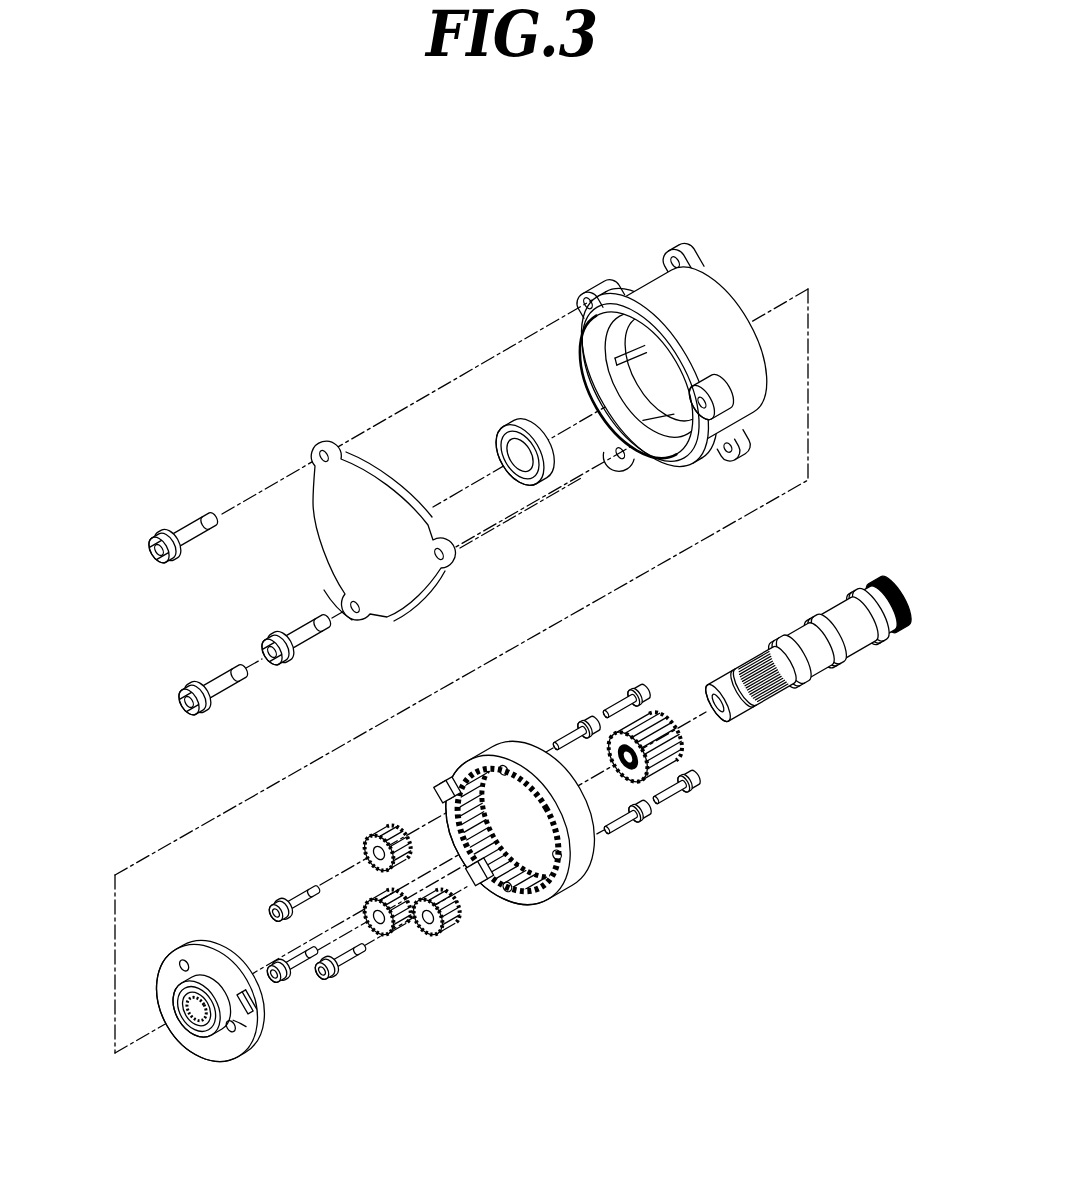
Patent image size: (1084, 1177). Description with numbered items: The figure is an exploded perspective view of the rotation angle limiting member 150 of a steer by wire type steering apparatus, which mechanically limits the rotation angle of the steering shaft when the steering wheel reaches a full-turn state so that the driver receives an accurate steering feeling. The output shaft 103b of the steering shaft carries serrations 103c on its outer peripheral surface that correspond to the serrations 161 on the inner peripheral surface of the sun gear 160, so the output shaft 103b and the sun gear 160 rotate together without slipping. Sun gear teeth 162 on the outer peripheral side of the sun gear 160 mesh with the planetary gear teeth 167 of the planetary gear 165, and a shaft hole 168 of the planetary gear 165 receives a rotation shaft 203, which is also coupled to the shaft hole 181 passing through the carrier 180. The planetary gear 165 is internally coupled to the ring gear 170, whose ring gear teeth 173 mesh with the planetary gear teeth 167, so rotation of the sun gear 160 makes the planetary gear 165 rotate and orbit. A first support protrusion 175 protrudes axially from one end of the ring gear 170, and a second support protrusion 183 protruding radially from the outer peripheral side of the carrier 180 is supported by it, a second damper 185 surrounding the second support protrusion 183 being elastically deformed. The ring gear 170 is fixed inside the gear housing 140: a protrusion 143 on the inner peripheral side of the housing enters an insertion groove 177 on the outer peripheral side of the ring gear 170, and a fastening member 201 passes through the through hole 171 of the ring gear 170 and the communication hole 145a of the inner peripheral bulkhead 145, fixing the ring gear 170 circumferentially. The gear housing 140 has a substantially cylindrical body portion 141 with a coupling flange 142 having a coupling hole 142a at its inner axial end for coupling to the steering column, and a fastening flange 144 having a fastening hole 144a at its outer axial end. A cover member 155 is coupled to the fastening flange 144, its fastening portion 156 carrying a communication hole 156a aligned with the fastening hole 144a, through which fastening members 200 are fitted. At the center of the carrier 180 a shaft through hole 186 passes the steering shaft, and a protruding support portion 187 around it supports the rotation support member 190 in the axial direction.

The output shaft 103b is at (807, 673).
The serrations 103c is at (780, 702).
The gear housing 140 is at (635, 343).
The body portion 141 is at (683, 357).
The coupling flange 142 is at (682, 262).
The coupling hole 142a is at (675, 262).
The protrusion 143 is at (640, 383).
The fastening flange 144 is at (599, 297).
The fastening hole 144a is at (588, 303).
The inner peripheral bulkhead 145 is at (643, 382).
The communication hole 145a is at (645, 385).
The rotation angle limiting member 150 is at (196, 287).
The cover member 155 is at (404, 492).
The cover fastening portion 156 is at (478, 590).
The communication hole 156a is at (462, 556).
The sun gear 160 is at (681, 707).
The serrations 161 is at (507, 827).
The sun gear teeth 162 is at (662, 706).
The planetary gear 165 is at (428, 925).
The planetary gear teeth 167 is at (428, 912).
The shaft hole 168 is at (448, 930).
The ring gear 170 is at (511, 853).
The through hole 171 is at (520, 823).
The ring gear teeth 173 is at (508, 830).
The first support protrusion 175 is at (450, 815).
The insertion groove 177 is at (501, 834).
The carrier 180 is at (194, 1041).
The shaft hole 181 is at (208, 995).
The second support protrusion 183 is at (247, 1002).
The second damper 185 is at (262, 1006).
The shaft through hole 186 is at (197, 1009).
The protruding support portion 187 is at (201, 1006).
The rotation support member 190 is at (494, 412).
The housing bolt 200 is at (170, 530).
The fastening member 201 is at (688, 812).
The rotation shaft 203 is at (340, 986).